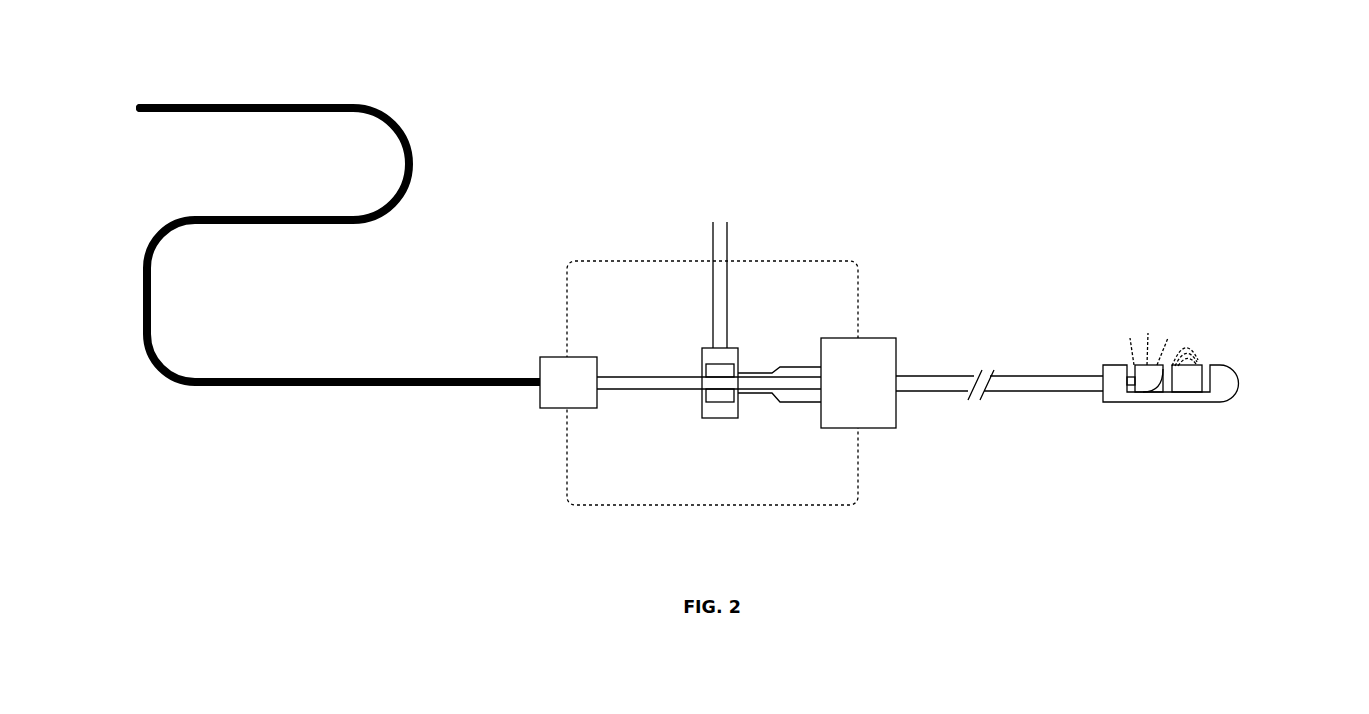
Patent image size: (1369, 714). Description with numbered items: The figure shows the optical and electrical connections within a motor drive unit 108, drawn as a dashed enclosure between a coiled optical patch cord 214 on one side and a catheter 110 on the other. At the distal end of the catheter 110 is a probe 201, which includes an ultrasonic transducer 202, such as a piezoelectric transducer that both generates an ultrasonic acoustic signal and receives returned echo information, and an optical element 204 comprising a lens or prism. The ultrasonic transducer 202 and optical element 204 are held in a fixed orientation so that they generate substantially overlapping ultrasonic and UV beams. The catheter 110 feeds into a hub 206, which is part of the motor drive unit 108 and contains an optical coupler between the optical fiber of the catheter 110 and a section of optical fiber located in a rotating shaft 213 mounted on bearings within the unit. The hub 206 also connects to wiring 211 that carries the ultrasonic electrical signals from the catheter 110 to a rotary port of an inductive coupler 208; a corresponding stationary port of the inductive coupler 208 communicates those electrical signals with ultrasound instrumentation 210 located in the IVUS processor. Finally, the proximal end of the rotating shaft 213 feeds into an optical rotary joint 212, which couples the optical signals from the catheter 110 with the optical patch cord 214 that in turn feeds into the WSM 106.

The WSM 106 is at (137, 97).
The optical patch cord 214 is at (340, 245).
The motor drive unit 108 is at (712, 412).
The optical rotary joint 212 is at (580, 357).
The rotating shaft 213 is at (663, 392).
The ultrasound instrumentation 210 is at (730, 250).
The inductive coupler 208 is at (723, 417).
The wiring 211 is at (812, 398).
The hub 206 is at (858, 383).
The catheter 110 is at (999, 398).
The probe 201 is at (1171, 400).
The optical element 204 is at (1140, 366).
The ultrasonic transducer 202 is at (1197, 366).